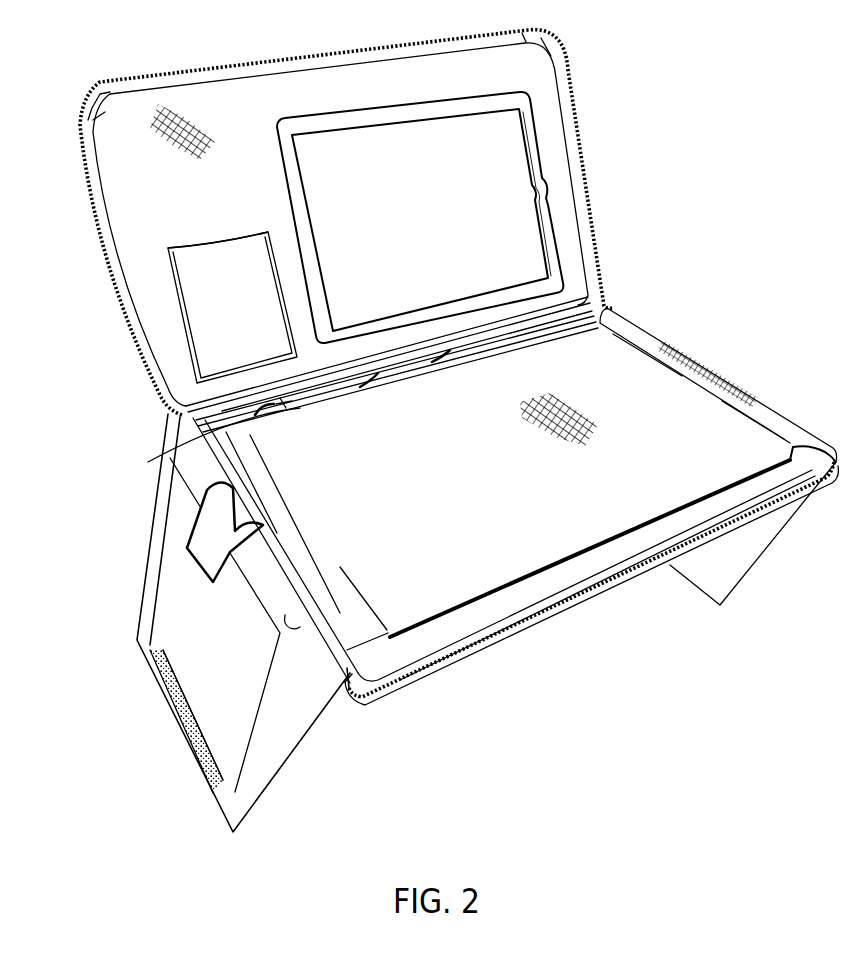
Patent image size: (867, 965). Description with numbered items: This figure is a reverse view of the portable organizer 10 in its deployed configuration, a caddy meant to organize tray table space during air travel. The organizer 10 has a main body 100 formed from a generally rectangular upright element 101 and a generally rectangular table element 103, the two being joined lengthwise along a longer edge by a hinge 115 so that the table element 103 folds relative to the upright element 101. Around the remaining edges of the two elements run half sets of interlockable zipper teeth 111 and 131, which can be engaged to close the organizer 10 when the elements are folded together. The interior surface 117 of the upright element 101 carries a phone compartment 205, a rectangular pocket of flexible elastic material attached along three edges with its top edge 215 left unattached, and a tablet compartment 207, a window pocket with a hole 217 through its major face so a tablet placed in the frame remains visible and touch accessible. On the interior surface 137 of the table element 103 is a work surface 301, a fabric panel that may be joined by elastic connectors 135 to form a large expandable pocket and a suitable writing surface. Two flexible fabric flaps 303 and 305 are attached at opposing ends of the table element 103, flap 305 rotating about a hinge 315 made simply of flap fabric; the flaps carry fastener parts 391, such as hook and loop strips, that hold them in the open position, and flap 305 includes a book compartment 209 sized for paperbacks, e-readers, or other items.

The organizer 10 is at (701, 47).
The main body 100 is at (135, 340).
The upright element 101 is at (120, 275).
The table element 103 is at (418, 678).
The zipper teeth 111 is at (105, 247).
The hinge 115 is at (183, 426).
The interior surface 117 is at (145, 181).
The zipper teeth 131 is at (490, 650).
The elastic connectors 135 is at (772, 432).
The interior surface 137 is at (600, 520).
The phone compartment 205 is at (258, 323).
The tablet compartment 207 is at (343, 121).
The book compartment 209 is at (225, 663).
The top edge 215 is at (229, 240).
The hole 217 is at (460, 238).
The work surface 301 is at (568, 565).
The flap 303 is at (742, 572).
The flap 305 is at (263, 785).
The hinge 315 is at (345, 678).
The fastener parts 391 is at (190, 733).